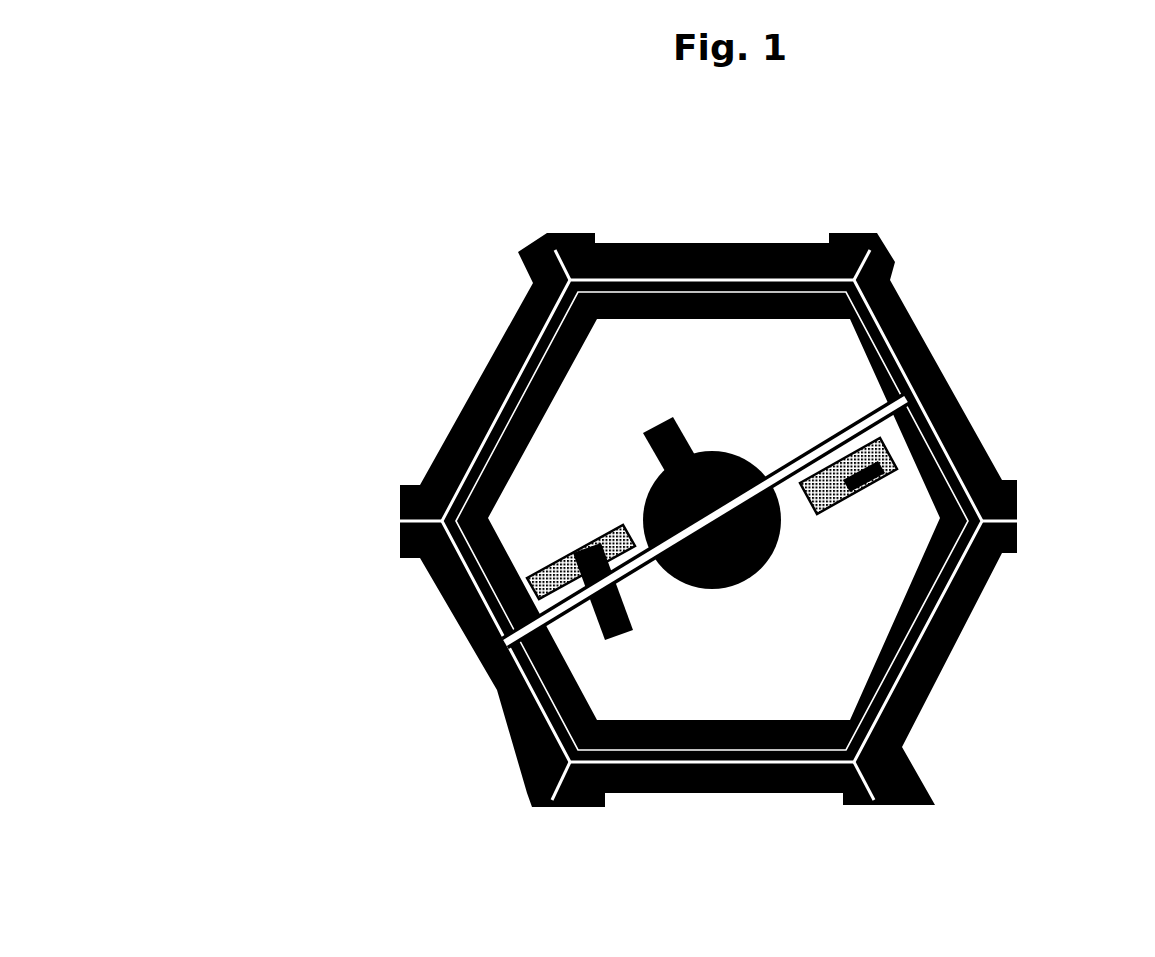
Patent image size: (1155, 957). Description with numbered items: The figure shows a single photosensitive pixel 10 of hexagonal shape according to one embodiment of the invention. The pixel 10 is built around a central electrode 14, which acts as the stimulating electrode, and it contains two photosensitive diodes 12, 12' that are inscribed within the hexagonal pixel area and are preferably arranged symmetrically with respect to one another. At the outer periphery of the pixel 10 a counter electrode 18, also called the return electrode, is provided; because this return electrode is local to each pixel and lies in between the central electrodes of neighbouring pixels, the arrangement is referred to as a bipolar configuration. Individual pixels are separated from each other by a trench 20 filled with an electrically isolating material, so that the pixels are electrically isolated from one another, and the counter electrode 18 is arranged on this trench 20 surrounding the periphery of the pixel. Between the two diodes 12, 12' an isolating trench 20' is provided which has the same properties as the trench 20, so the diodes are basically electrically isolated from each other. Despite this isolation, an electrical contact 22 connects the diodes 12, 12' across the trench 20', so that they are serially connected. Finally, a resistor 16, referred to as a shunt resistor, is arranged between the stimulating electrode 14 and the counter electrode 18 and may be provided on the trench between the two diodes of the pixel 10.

The photosensitive pixel 10 is at (408, 606).
The photosensitive diode 12 is at (747, 504).
The photosensitive diode 12' is at (723, 771).
The central electrode 14 is at (697, 490).
The resistor 16 is at (847, 427).
The counter electrode 18 is at (445, 463).
The trench 20 is at (510, 338).
The isolating trench 20' is at (828, 550).
The electrical contact 22 is at (600, 590).